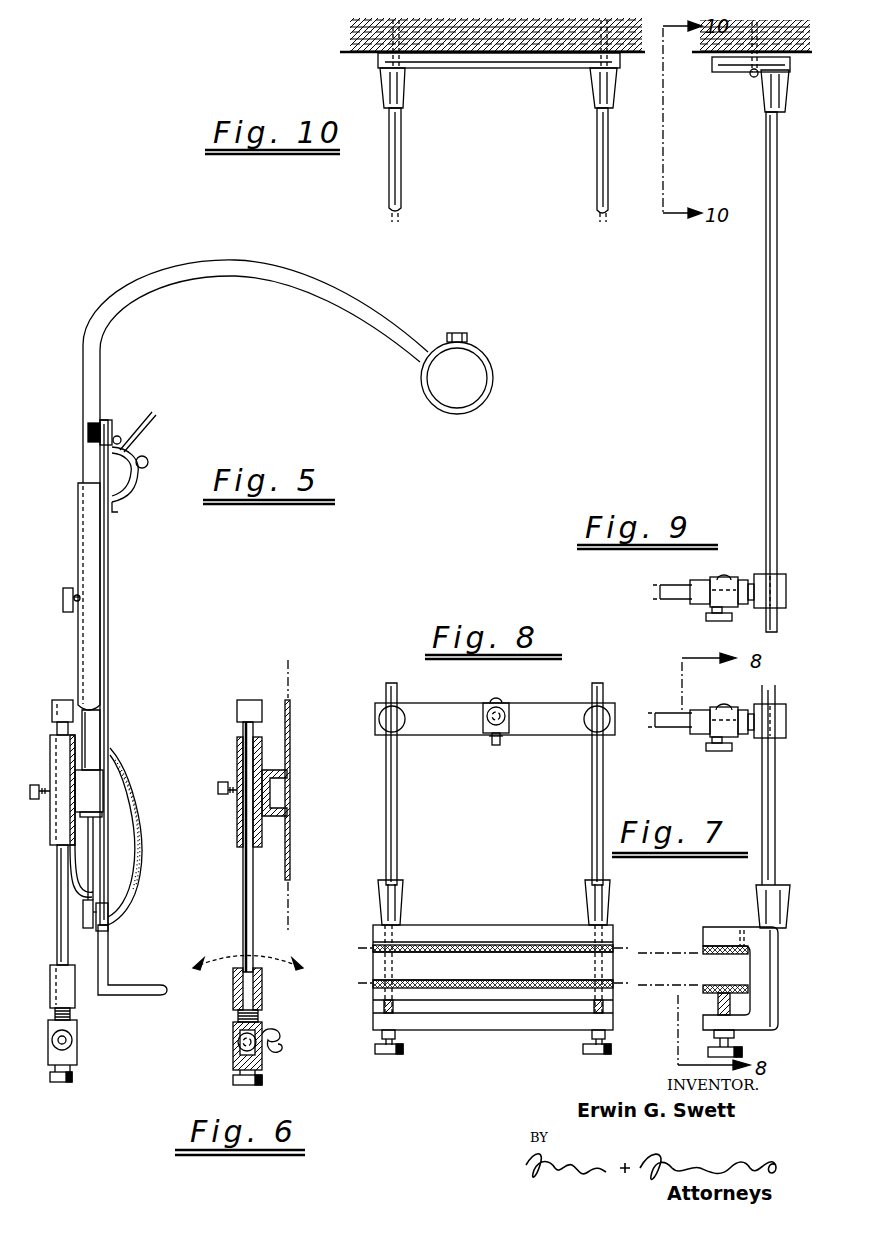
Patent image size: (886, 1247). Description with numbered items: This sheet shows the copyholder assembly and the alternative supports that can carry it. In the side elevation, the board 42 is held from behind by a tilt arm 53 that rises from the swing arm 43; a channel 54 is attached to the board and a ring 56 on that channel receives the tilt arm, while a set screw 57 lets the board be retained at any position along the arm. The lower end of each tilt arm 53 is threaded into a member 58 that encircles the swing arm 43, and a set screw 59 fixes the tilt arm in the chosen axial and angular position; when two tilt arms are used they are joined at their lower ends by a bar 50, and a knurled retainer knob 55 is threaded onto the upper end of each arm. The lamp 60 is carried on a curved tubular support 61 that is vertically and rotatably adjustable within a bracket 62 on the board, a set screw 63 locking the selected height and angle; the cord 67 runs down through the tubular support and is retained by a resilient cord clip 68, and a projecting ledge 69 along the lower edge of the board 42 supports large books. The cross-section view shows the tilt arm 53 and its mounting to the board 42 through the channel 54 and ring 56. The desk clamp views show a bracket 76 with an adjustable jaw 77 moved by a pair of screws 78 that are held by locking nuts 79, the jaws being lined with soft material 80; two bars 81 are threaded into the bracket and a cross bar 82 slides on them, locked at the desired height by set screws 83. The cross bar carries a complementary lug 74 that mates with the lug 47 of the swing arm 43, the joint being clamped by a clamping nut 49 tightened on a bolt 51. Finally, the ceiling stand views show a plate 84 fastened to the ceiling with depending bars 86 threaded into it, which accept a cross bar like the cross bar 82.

In FIG. 6, the board 42 is at (290, 730).
In FIG. 9, the swing arm 43 is at (675, 592).
In FIG. 7, the swing arm 43 is at (678, 727).
In FIG. 8, the swing arm 43 is at (487, 722).
In FIG. 6, the swing arm 43 is at (233, 1050).
In FIG. 9, the lug 47 is at (722, 578).
In FIG. 7, the lug 47 is at (720, 710).
In FIG. 9, the clamping nut 49 is at (724, 621).
In FIG. 7, the clamping nut 49 is at (720, 751).
In FIG. 6, the bar 50 is at (262, 996).
In FIG. 5, the bar 50 is at (50, 992).
In FIG. 7, the bolt 51 is at (748, 701).
In FIG. 6, the tilt arm 53 is at (245, 866).
In FIG. 5, the tilt arm 53 is at (57, 950).
In FIG. 6, the channel 54 is at (275, 775).
In FIG. 6, the knurled retainer knob 55 is at (247, 702).
In FIG. 5, the knurled retainer knob 55 is at (57, 702).
In FIG. 6, the ring 56 is at (237, 752).
In FIG. 5, the ring 56 is at (60, 823).
In FIG. 6, the set screw 57 is at (217, 790).
In FIG. 5, the set screw 57 is at (34, 784).
In FIG. 6, the member 58 is at (233, 1035).
In FIG. 6, the set screw 59 is at (255, 1083).
In FIG. 5, the set screw 59 is at (70, 1083).
In FIG. 5, the lamp 60 is at (421, 405).
In FIG. 5, the curved tubular support 61 is at (108, 343).
In FIG. 5, the bracket 62 is at (90, 515).
In FIG. 5, the set screw 63 is at (63, 595).
In FIG. 5, the cord 67 is at (54, 941).
In FIG. 6, the resilient cord clip 68 is at (281, 1049).
In FIG. 5, the projecting ledge 69 is at (108, 994).
In FIG. 7, the complementary lug 74 is at (710, 735).
In FIG. 7, the bracket 76 is at (768, 975).
In FIG. 7, the adjustable jaw 77 is at (708, 995).
In FIG. 8, the screw 78 is at (393, 1054).
In FIG. 8, the locking nut 79 is at (398, 1030).
In FIG. 8, the soft material 80 is at (518, 982).
In FIG. 8, the bar 81 is at (397, 838).
In FIG. 8, the cross bar 82 is at (534, 729).
In FIG. 8, the set screw 83 is at (392, 712).
In FIG. 10, the plate 84 is at (484, 60).
In FIG. 9, the plate 84 is at (722, 63).
In FIG. 10, the bar 86 is at (401, 187).
In FIG. 9, the bar 86 is at (766, 265).